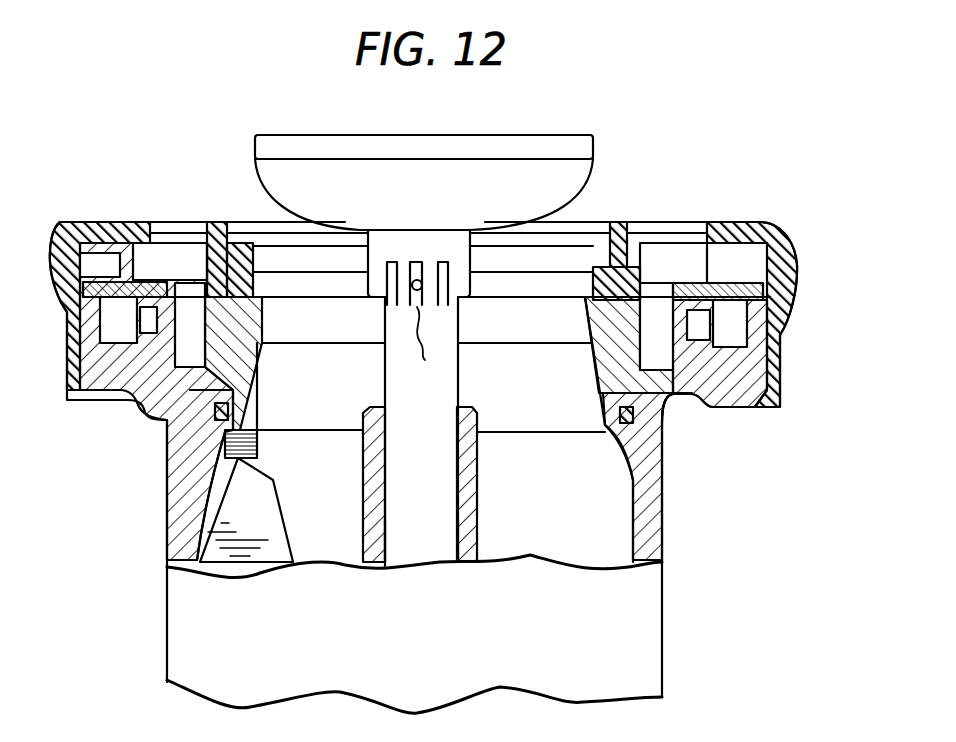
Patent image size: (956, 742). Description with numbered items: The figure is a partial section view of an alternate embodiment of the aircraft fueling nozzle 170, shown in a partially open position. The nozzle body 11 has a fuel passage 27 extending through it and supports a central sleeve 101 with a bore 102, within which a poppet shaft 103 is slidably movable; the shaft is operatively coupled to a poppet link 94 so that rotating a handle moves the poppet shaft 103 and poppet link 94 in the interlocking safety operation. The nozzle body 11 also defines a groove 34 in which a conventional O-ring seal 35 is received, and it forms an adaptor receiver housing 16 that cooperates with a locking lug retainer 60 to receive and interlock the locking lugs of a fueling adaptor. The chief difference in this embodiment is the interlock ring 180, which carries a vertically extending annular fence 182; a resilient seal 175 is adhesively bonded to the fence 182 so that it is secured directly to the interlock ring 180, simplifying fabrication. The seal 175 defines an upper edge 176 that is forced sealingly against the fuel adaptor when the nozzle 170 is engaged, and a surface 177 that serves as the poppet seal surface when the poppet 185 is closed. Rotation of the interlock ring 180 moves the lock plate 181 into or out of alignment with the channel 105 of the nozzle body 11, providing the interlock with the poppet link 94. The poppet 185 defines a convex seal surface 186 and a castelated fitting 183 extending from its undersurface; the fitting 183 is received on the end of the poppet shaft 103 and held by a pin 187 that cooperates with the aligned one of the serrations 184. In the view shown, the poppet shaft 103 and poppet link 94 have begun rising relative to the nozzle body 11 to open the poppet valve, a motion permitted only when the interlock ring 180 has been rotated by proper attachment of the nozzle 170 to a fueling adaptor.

The aircraft fueling nozzle 170 is at (727, 151).
The poppet 185 is at (337, 137).
The convex seal surface 186 is at (254, 164).
The castelated fitting 183 is at (425, 247).
The serrations 184 is at (411, 322).
The pin 187 is at (422, 287).
The interlock ring 180 is at (173, 223).
The locking lug retainer 60 is at (770, 228).
The adaptor receiver housing 16 is at (778, 350).
The annular fence 182 is at (193, 223).
The surface 177 is at (586, 262).
The upper edge 176 is at (601, 232).
The resilient seal 175 is at (637, 228).
The lock plate 181 is at (253, 428).
The channel 105 is at (203, 477).
The poppet link 94 is at (217, 515).
The bore 102 is at (453, 485).
The groove 34 is at (664, 424).
The nozzle body 11 is at (664, 457).
The O-ring seal 35 is at (637, 415).
The fuel passage 27 is at (600, 530).
The poppet shaft 103 is at (410, 540).
The central sleeve 101 is at (480, 523).